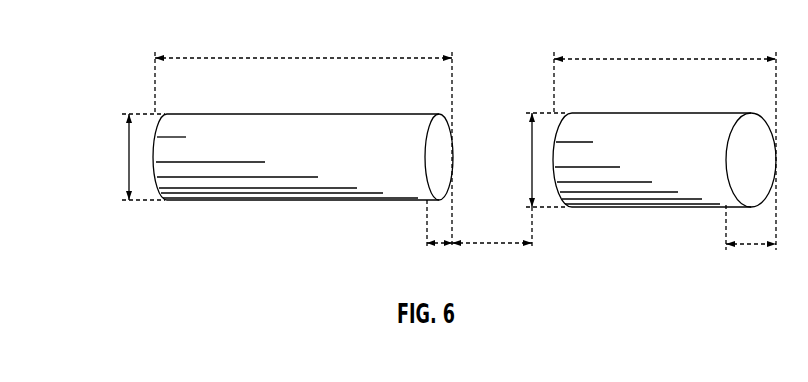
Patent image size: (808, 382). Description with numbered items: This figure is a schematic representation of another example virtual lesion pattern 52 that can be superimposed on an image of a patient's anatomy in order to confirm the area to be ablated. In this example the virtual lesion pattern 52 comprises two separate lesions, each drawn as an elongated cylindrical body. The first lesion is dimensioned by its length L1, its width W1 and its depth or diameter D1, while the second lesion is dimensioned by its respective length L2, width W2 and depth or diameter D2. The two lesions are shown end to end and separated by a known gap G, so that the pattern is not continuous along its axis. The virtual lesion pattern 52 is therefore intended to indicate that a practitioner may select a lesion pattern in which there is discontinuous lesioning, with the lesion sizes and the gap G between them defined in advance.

The virtual lesion pattern 52 is at (221, 96).
The length of first lesion L1 is at (305, 58).
The length of second lesion L2 is at (651, 59).
The width of first lesion W1 is at (129, 172).
The width of second lesion W2 is at (532, 173).
The depth or diameter of first lesion D1 is at (441, 245).
The depth or diameter of second lesion D2 is at (748, 246).
The gap G is at (493, 243).